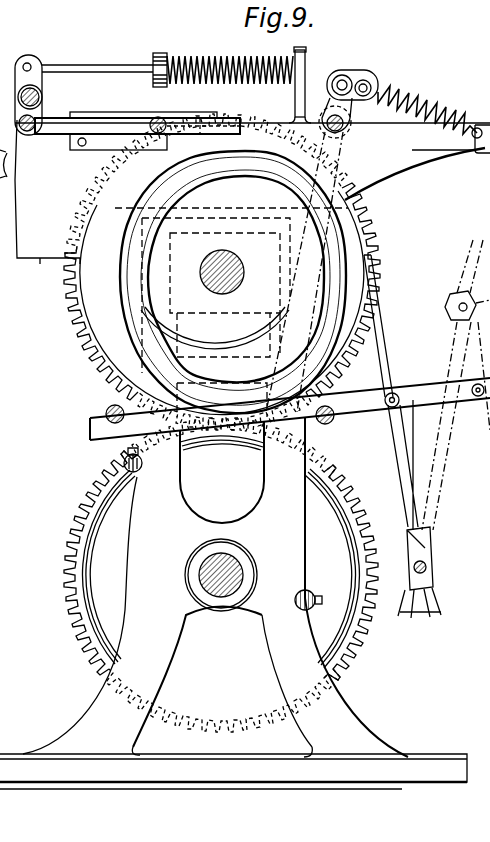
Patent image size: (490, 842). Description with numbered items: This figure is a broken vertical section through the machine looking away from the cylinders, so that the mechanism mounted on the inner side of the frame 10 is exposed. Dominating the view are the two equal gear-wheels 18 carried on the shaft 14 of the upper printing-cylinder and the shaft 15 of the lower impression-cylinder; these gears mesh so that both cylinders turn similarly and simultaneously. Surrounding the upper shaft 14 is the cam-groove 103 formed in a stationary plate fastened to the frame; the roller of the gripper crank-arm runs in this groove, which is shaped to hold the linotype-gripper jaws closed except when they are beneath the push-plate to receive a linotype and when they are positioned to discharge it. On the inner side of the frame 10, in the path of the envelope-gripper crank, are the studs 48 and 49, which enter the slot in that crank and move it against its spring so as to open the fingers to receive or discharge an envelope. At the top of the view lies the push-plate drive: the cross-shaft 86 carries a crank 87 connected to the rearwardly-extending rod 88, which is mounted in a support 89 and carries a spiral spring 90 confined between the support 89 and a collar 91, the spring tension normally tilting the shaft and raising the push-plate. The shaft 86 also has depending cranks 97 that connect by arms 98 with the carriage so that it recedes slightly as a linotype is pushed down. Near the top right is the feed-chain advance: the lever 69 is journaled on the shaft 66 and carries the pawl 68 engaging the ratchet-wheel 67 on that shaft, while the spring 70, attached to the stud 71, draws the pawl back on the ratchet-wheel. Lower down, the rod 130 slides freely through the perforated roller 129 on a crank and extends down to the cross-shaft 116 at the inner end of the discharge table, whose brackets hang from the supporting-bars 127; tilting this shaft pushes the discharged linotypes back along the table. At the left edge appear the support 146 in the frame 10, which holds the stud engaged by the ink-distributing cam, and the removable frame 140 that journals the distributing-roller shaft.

The frame 10 is at (245, 583).
The shaft 14 is at (208, 262).
The shaft 15 is at (241, 557).
The gear-wheels 18 is at (378, 222).
The stud 48 is at (300, 603).
The stud 49 is at (138, 478).
The shaft 66 is at (345, 125).
The ratchet-wheel 67 is at (355, 118).
The pawl 68 is at (348, 93).
The lever 69 is at (345, 160).
The spring 70 is at (427, 110).
The stud 71 is at (485, 127).
The cross-shaft 86 is at (40, 97).
The crank 87 is at (36, 70).
The rod 88 is at (115, 65).
The support 89 is at (302, 58).
The spiral spring 90 is at (230, 57).
The collar 91 is at (160, 53).
The depending cranks 97 is at (45, 112).
The arms 98 is at (57, 134).
The cam-groove 103 is at (233, 282).
The cross-shaft 116 is at (427, 463).
The supporting-bars 127 is at (88, 440).
The perforated roller 129 is at (382, 414).
The rod 130 is at (386, 345).
The frame 140 is at (12, 179).
The support 146 is at (17, 174).